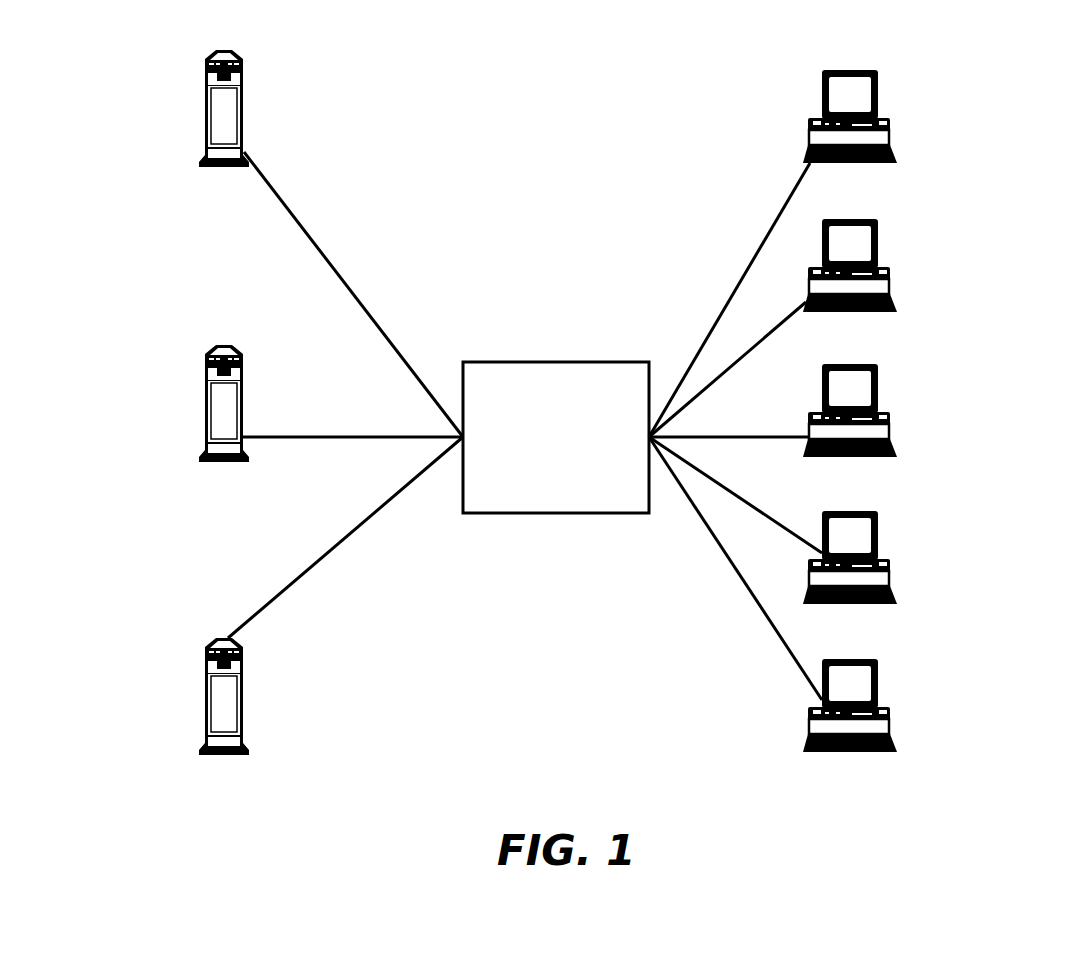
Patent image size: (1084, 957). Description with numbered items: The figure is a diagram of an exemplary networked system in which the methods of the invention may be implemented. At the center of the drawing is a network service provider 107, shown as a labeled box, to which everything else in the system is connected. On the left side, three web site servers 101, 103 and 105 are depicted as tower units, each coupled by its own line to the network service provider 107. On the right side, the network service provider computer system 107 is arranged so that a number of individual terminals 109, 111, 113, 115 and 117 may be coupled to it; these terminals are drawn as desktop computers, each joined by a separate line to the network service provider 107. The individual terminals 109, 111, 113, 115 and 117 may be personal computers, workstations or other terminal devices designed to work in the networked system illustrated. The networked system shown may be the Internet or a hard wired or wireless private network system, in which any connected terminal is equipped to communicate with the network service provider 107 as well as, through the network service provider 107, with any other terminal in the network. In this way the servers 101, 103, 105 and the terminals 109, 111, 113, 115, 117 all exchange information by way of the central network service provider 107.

The web site server 101 is at (203, 98).
The web site server 103 is at (222, 345).
The web site server 105 is at (223, 638).
The network service provider 107 is at (556, 362).
The individual terminal 109 is at (855, 68).
The individual terminal 111 is at (878, 253).
The individual terminal 113 is at (878, 400).
The individual terminal 115 is at (878, 547).
The individual terminal 117 is at (878, 693).